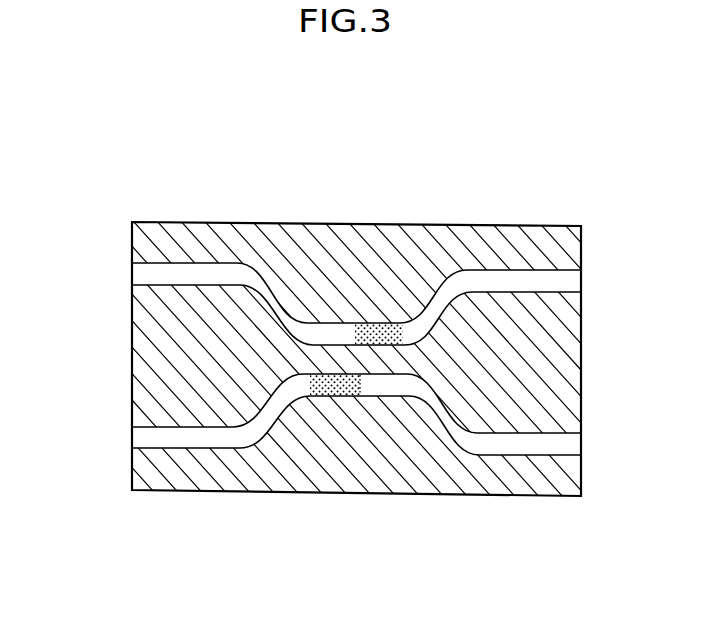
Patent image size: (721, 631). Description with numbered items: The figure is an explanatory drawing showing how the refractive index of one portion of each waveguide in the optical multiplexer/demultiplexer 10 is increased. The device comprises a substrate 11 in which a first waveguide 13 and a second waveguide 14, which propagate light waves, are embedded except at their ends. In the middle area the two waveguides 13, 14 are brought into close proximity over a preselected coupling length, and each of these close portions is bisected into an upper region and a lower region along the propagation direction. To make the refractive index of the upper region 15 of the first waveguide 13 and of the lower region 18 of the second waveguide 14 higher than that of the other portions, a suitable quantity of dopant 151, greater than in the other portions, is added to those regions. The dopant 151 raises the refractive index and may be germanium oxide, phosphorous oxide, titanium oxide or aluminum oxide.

The optical multiplexer/demultiplexer 10 is at (131, 350).
The substrate 11 is at (168, 222).
The first waveguide 13 is at (517, 278).
The second waveguide 14 is at (515, 443).
The upper region 15 is at (350, 322).
The dopant 151 is at (388, 325).
The lower region 18 is at (362, 388).